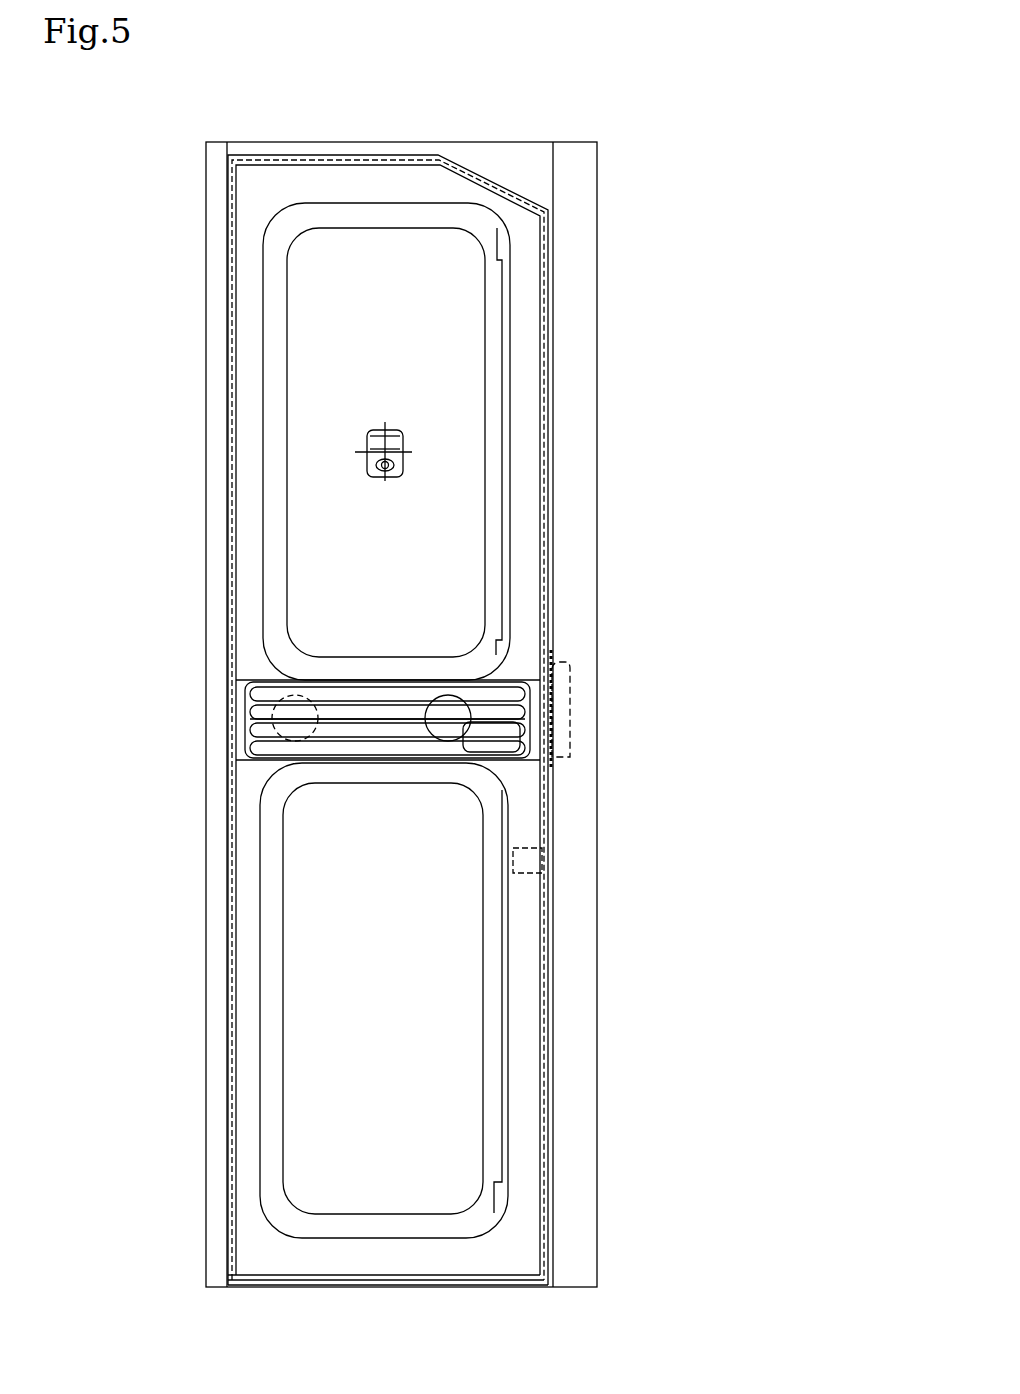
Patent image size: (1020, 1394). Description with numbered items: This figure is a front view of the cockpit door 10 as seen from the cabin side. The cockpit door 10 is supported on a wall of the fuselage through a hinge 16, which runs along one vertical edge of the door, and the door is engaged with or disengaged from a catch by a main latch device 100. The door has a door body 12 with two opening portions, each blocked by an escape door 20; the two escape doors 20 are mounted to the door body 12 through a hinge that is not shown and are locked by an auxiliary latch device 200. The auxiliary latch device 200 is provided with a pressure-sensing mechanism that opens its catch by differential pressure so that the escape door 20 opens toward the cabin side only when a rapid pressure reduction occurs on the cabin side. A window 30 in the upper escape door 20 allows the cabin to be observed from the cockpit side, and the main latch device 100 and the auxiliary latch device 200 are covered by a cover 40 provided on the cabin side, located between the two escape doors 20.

The cockpit door 10 is at (490, 117).
The door body 12 is at (376, 190).
The hinge 16 is at (226, 460).
The escape door 20 is at (399, 560).
The window 30 is at (403, 440).
The cover 40 is at (492, 710).
The main latch device 100 is at (447, 727).
The auxiliary latch device 200 is at (275, 730).